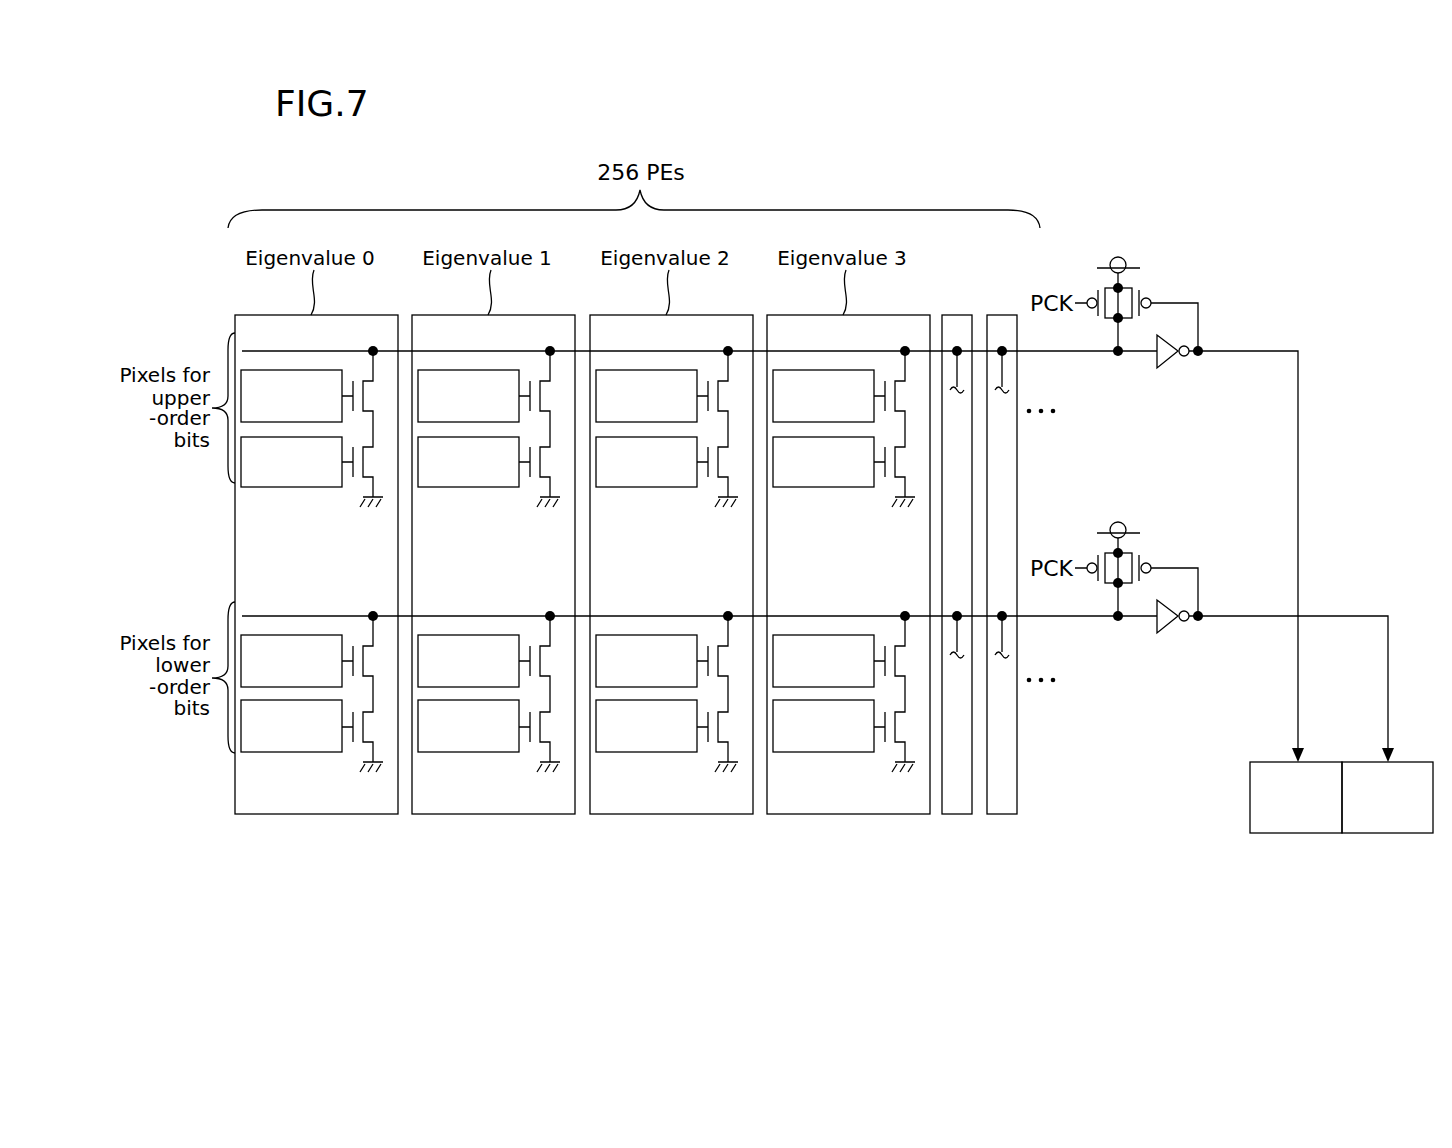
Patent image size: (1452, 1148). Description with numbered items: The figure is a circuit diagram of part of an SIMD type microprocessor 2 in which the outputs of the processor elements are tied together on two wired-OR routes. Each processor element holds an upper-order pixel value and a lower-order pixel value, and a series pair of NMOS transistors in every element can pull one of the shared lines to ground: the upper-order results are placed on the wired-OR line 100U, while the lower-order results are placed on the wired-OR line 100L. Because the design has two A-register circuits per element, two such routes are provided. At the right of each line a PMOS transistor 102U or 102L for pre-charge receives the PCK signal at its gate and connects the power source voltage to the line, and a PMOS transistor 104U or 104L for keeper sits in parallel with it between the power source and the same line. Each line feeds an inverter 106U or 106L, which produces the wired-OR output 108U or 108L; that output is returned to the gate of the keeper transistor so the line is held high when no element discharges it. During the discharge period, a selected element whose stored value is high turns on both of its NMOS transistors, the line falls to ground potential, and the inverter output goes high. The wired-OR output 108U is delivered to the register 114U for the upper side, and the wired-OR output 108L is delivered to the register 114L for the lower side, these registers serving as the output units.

The SIMD type microprocessor 2 is at (832, 175).
The wired-OR line 100U is at (1082, 353).
The wired-OR line 100L is at (1082, 618).
The PMOS transistor for pre-charge 102U is at (1092, 289).
The PMOS transistor for pre-charge 102L is at (1092, 554).
The PMOS transistor for keeper 104U is at (1146, 290).
The PMOS transistor for keeper 104L is at (1146, 555).
The inverter 106U is at (1170, 333).
The inverter 106L is at (1170, 598).
The wired-OR output 108U is at (1230, 351).
The wired-OR output 108L is at (1242, 618).
The register for upper side 114U is at (1293, 834).
The register for lower side 114L is at (1385, 834).